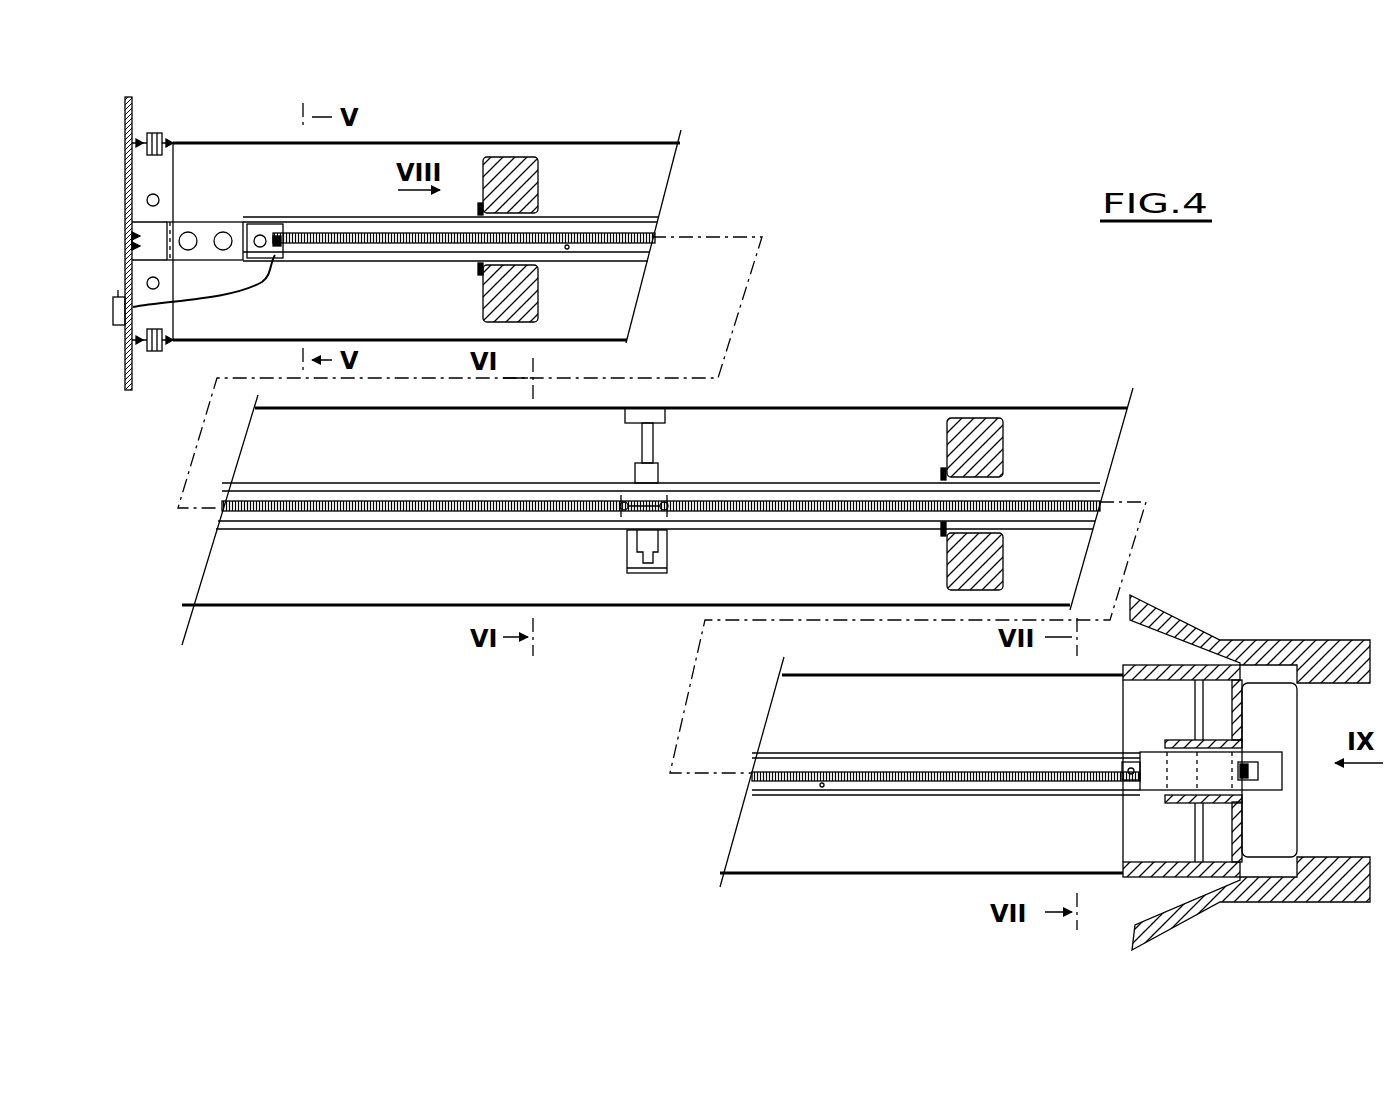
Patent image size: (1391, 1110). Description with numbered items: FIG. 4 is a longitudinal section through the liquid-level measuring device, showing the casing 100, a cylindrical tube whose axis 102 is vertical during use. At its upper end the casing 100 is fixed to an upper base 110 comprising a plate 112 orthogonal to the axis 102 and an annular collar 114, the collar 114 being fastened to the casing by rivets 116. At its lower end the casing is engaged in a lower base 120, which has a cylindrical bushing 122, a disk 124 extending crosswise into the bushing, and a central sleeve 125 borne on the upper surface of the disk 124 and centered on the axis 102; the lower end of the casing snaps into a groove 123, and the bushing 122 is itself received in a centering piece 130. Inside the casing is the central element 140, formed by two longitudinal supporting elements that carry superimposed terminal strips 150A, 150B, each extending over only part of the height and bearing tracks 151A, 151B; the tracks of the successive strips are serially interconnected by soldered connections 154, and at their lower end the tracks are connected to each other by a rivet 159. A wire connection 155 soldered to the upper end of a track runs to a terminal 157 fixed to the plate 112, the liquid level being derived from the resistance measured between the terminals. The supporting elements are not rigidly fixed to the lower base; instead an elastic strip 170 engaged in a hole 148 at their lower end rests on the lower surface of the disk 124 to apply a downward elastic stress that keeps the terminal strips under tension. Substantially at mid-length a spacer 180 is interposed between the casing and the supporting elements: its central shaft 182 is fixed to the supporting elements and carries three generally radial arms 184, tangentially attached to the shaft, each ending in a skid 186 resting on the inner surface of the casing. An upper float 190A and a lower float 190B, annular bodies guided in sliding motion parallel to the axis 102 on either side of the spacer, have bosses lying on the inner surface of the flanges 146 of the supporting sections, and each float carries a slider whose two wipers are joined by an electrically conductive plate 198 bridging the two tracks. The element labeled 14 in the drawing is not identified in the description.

The casing 100 is at (439, 232).
The axis 102 is at (717, 236).
The upper base 110 is at (126, 188).
The plate 112 is at (125, 120).
The annular collar 114 is at (173, 325).
The rivets 116 is at (165, 140).
The lower base 120 is at (1222, 776).
The cylindrical bushing 122 is at (1268, 890).
The groove 123 is at (1122, 870).
The disk 124 is at (1243, 820).
The central sleeve 125 is at (1172, 803).
The centering piece 130 is at (1345, 875).
The drive chain / rack 14 is at (262, 236).
The central element 140 is at (657, 500).
The flange 146 is at (640, 217).
The hole 148 is at (1250, 762).
The terminal strip 150A is at (394, 236).
The terminal strip 150B is at (854, 497).
The track 151A is at (397, 248).
The track 151B is at (820, 516).
The soldered connections 154 is at (637, 518).
The wire connection 155 is at (270, 278).
The terminal 157 is at (115, 320).
The rivet 159 is at (1128, 760).
The elastic strip 170 is at (1260, 772).
The spacer 180 is at (673, 477).
The central shaft 182 is at (652, 473).
The radial arms 184 is at (645, 453).
The skid 186 is at (656, 412).
The upper float 190A is at (548, 178).
The lower float 190B is at (988, 432).
The electrically conductive plate 198 is at (480, 210).